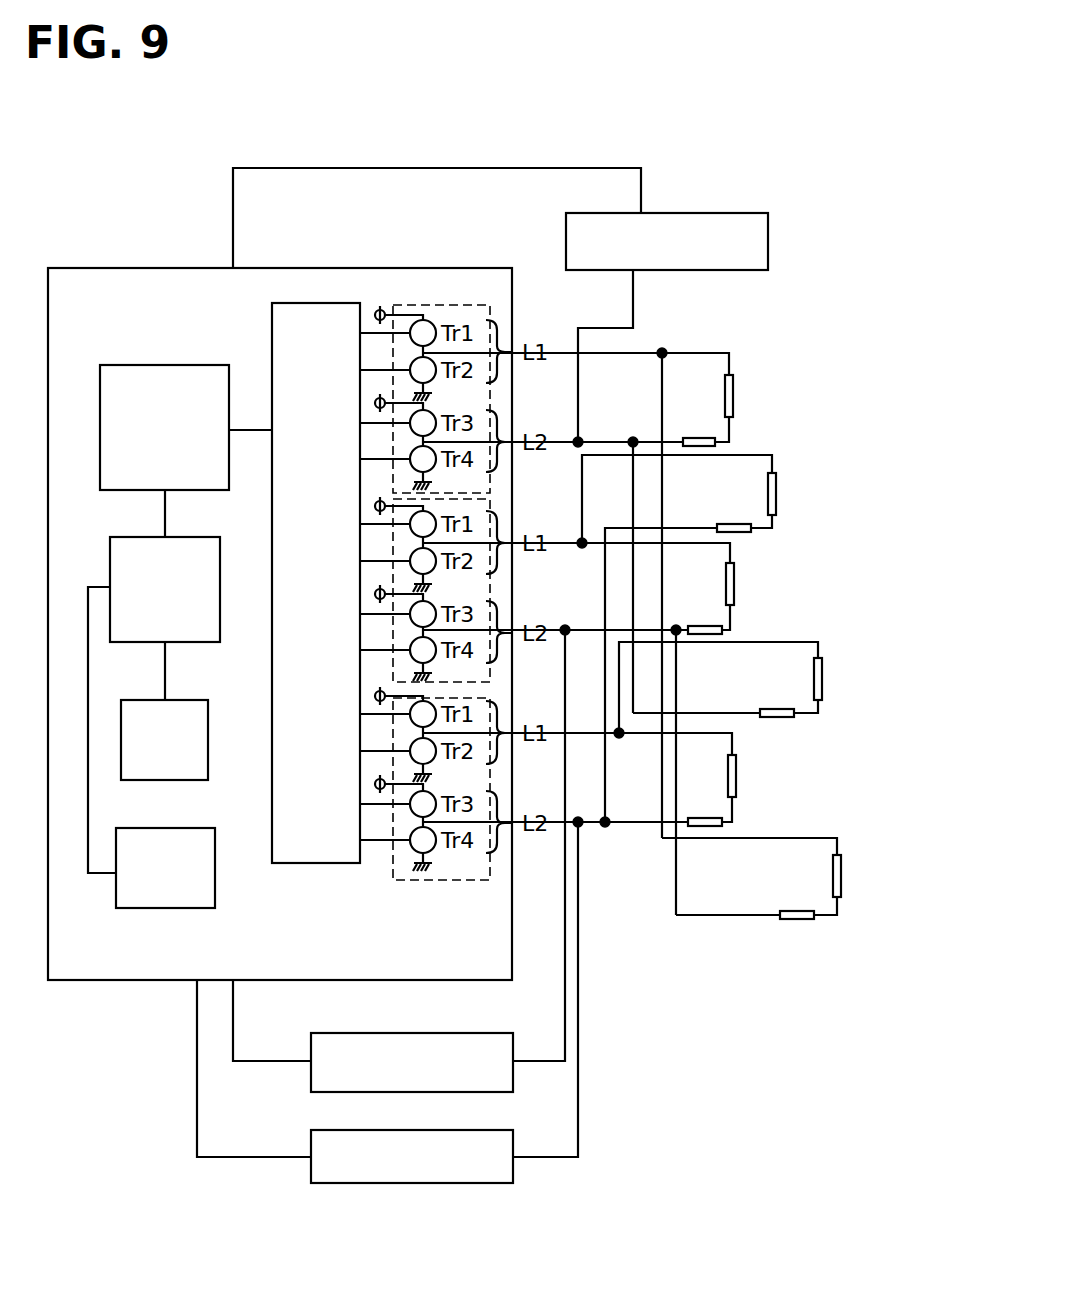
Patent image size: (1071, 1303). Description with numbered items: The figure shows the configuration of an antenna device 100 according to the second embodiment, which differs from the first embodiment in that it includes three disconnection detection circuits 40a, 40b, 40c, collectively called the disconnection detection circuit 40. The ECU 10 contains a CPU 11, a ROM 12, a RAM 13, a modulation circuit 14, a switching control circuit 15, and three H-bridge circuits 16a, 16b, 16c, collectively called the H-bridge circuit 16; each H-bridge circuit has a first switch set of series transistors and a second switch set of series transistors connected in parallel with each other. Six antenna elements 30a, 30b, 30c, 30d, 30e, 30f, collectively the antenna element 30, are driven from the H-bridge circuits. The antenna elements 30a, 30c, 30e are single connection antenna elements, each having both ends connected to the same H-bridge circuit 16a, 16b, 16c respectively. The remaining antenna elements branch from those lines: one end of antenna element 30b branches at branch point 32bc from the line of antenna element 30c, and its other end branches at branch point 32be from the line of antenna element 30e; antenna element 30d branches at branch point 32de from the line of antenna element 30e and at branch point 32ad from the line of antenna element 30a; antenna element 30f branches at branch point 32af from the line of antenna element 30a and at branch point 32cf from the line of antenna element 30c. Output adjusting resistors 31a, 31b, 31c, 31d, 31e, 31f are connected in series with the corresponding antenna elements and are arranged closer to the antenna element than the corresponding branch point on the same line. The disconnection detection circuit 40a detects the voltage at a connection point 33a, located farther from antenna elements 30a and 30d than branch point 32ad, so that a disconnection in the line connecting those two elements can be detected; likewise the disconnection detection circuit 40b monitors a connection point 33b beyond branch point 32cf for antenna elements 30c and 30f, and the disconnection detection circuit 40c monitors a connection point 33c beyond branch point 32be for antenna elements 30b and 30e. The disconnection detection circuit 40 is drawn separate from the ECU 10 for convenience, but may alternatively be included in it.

The antenna device 100 is at (99, 236).
The ECU 10 is at (451, 268).
The CPU 11 is at (193, 537).
The ROM 12 is at (185, 828).
The RAM 13 is at (178, 700).
The modulation circuit 14 is at (181, 365).
The switching control circuit 15 is at (323, 303).
The H-bridge circuit 16 is at (484, 608).
The H-bridge circuit 16a is at (492, 307).
The H-bridge circuit 16b is at (492, 588).
The H-bridge circuit 16c is at (440, 880).
The antenna element 30 is at (836, 634).
The antenna element 30a is at (735, 397).
The antenna element 30b is at (777, 497).
The antenna element 30c is at (735, 588).
The antenna element 30d is at (823, 684).
The antenna element 30e is at (737, 780).
The antenna element 30f is at (842, 881).
The output adjusting resistor 31a is at (691, 437).
The output adjusting resistor 31b is at (723, 523).
The output adjusting resistor 31c is at (724, 628).
The output adjusting resistor 31d is at (774, 709).
The output adjusting resistor 31e is at (701, 817).
The output adjusting resistor 31f is at (794, 911).
The branch point 32af is at (665, 350).
The branch point 32ad is at (633, 440).
The branch point 32bc is at (582, 541).
The branch point 32cf is at (677, 628).
The branch point 32de is at (620, 736).
The branch point 32be is at (607, 826).
The connection point 33a is at (578, 439).
The connection point 33b is at (578, 614).
The connection point 33c is at (580, 826).
The disconnection detection circuit 40 is at (563, 679).
The disconnection detection circuit 40a is at (752, 200).
The disconnection detection circuit 40b is at (450, 1033).
The disconnection detection circuit 40c is at (450, 1130).